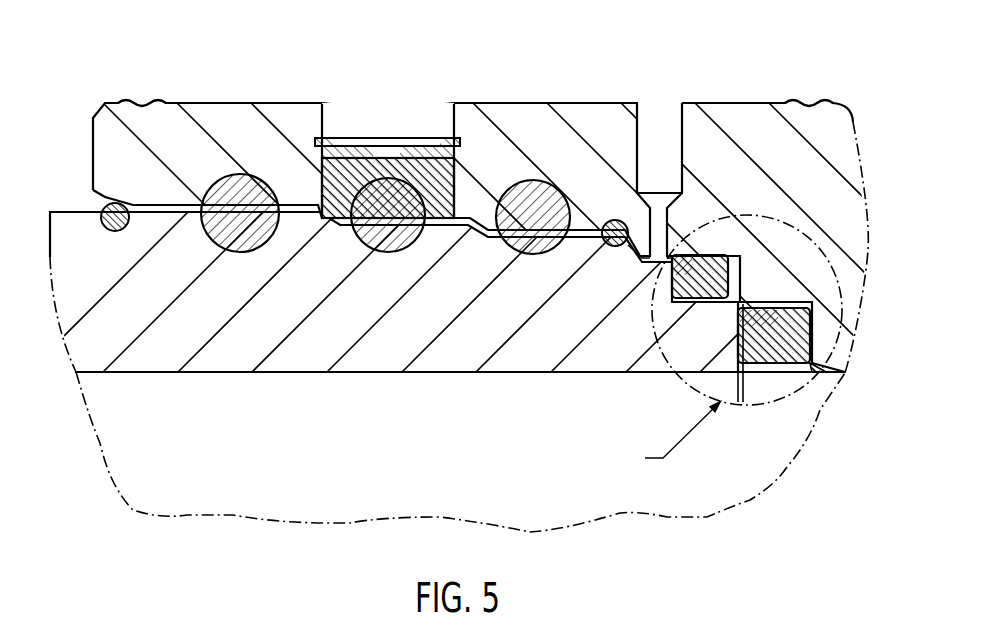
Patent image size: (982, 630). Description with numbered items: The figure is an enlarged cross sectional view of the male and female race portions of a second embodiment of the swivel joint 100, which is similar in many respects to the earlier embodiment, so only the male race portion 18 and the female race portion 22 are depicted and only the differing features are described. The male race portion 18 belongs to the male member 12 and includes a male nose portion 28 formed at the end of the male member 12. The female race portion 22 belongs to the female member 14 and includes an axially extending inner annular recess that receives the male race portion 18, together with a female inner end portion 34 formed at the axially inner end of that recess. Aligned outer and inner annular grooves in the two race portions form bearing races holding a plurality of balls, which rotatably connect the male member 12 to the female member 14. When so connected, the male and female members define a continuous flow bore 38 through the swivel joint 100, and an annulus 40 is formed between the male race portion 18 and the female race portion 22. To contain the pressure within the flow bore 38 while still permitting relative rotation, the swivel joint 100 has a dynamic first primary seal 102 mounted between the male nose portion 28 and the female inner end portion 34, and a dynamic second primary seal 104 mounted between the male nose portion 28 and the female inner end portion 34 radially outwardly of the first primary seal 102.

The swivel joint 100 is at (505, 272).
The male member 12 is at (836, 92).
The female member 14 is at (454, 315).
The male race portion 18 is at (350, 380).
The female race portion 22 is at (509, 90).
The male nose portion 28 is at (626, 354).
The female inner end portion 34 is at (772, 290).
The flow bore 38 is at (466, 489).
The annulus 40 is at (642, 262).
The first primary seal 102 is at (787, 366).
The second primary seal 104 is at (678, 360).